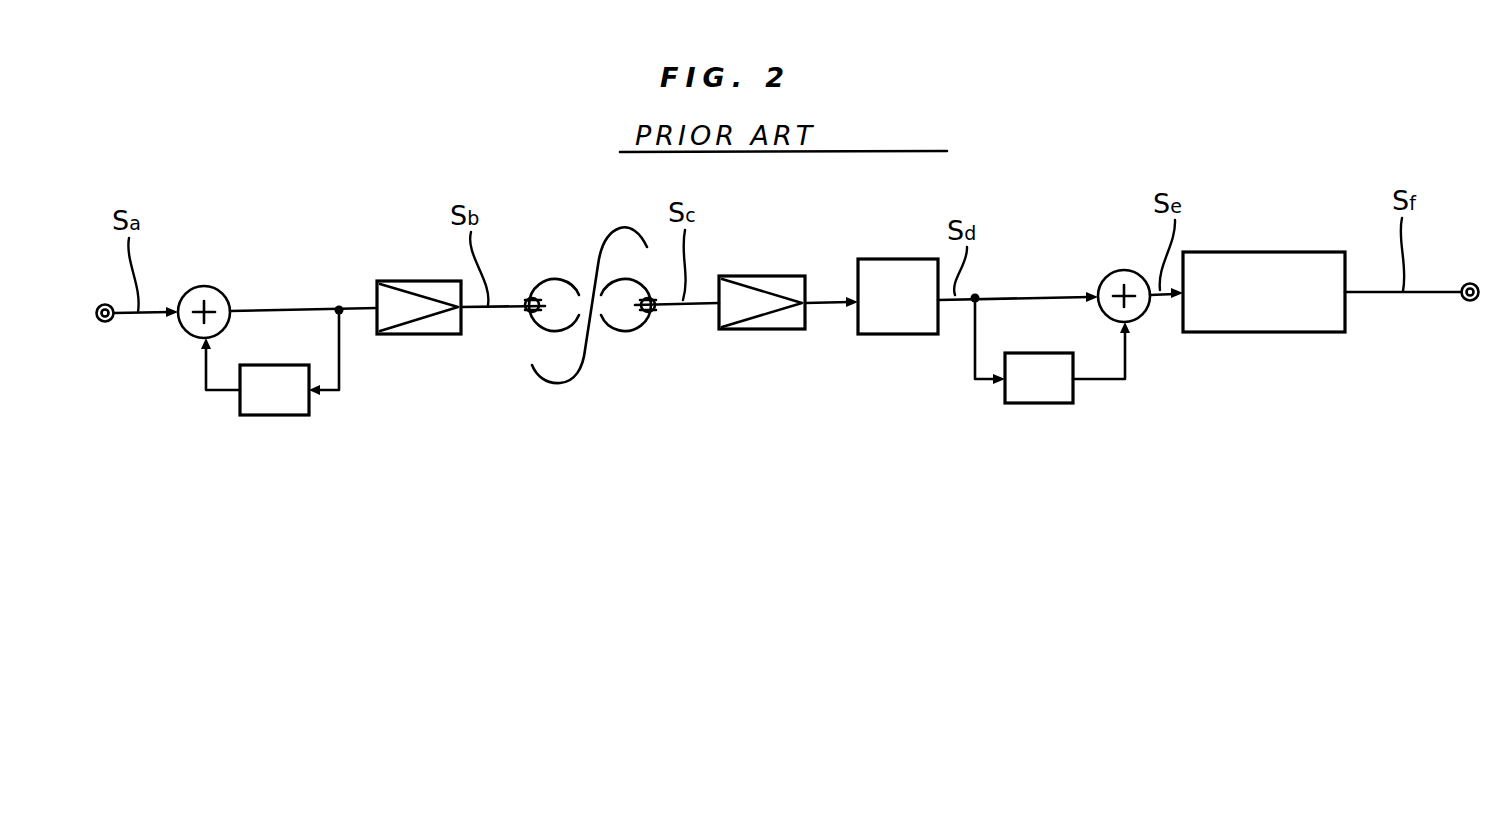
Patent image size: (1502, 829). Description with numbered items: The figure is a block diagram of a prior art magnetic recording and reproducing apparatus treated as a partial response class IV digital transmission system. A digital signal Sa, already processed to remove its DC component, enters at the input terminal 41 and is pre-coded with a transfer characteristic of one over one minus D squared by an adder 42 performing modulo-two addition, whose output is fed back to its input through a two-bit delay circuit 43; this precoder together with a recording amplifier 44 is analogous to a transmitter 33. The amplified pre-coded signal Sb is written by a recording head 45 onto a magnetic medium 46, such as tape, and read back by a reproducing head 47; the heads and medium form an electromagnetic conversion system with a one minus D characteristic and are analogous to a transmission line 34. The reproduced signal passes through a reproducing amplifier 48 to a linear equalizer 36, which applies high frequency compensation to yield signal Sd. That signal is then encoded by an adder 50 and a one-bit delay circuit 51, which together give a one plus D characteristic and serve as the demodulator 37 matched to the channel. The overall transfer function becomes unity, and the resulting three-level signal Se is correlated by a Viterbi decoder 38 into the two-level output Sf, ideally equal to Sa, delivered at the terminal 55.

The transmitter 33 is at (326, 210).
The transmission line 34 is at (600, 483).
The linear equalizer 36 is at (888, 336).
The demodulator 37 is at (1040, 255).
The Viterbi decoder 38 is at (1280, 333).
The input terminal 41 is at (105, 322).
The adder 42 is at (212, 288).
The two-bit delay circuit 43 is at (263, 415).
The recording amplifier 44 is at (418, 334).
The recording head 45 is at (553, 280).
The magnetic medium 46 is at (545, 386).
The reproducing head 47 is at (632, 331).
The reproducing amplifier 48 is at (765, 274).
The adder 50 is at (1115, 270).
The one-bit delay circuit 51 is at (1037, 404).
The output terminal 55 is at (1468, 302).